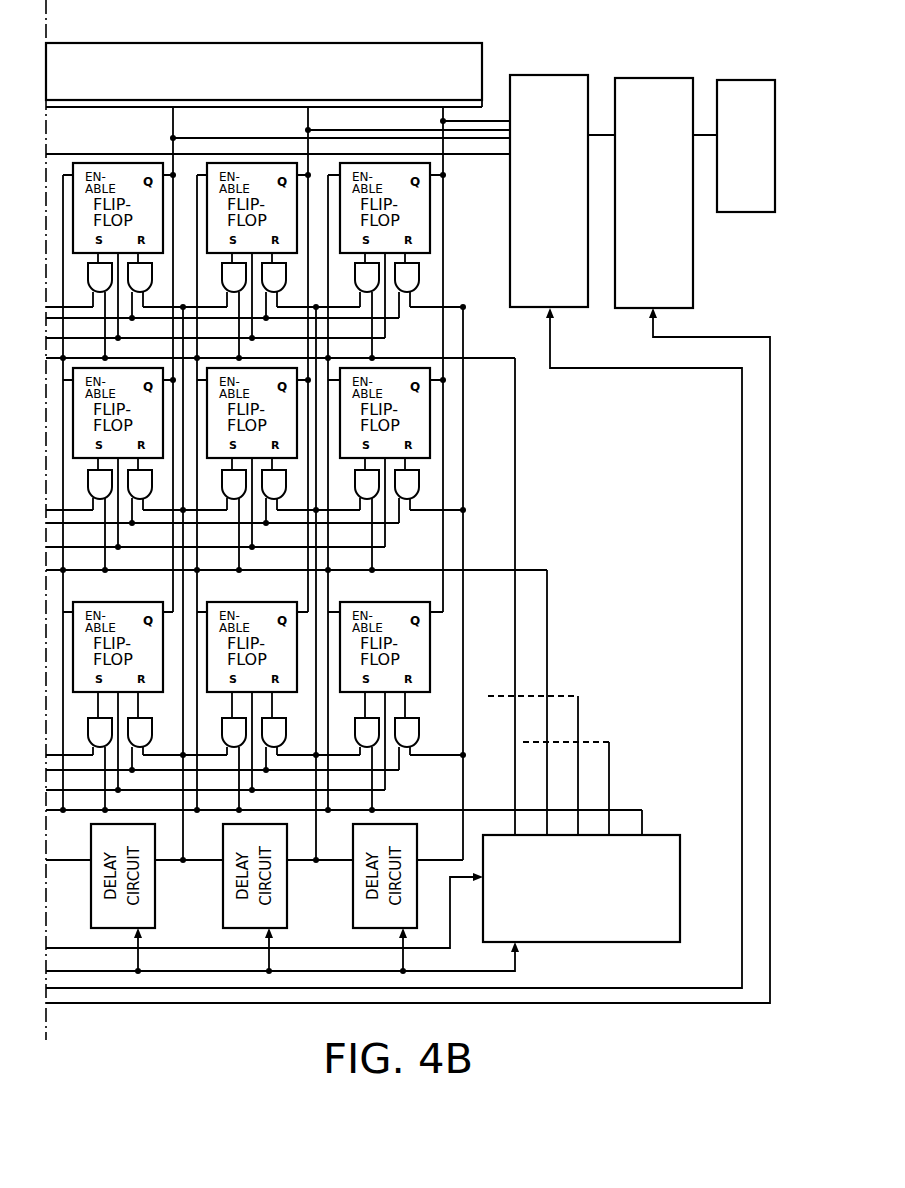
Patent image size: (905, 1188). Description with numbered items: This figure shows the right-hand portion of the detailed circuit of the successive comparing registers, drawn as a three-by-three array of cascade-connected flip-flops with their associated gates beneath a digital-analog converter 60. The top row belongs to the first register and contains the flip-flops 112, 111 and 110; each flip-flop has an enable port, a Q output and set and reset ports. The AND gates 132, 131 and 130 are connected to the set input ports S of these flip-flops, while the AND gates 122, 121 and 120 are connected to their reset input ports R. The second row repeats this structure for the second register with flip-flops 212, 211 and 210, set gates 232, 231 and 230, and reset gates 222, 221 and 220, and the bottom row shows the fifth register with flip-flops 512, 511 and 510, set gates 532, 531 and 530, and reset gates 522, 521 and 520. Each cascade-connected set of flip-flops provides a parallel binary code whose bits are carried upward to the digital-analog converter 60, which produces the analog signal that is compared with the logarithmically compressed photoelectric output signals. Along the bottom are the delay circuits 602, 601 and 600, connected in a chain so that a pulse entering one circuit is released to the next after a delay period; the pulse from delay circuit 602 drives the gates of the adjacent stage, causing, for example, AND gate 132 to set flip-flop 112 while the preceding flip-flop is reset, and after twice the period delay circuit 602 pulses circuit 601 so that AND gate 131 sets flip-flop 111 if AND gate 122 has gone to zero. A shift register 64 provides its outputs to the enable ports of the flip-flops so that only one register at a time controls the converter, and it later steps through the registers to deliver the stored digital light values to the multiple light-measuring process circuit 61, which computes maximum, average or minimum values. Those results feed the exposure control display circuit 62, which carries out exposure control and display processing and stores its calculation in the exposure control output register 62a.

The digital-analog converter 60 is at (352, 43).
The multiple light-measuring process circuit 61 is at (538, 75).
The exposure control display circuit 62 is at (636, 78).
The exposure control output register 62a is at (757, 80).
The shift register 64 is at (680, 885).
The flip-flop 110 is at (431, 217).
The flip-flop 111 is at (254, 163).
The flip-flop 112 is at (122, 163).
The AND gate 120 is at (416, 263).
The AND gate 121 is at (282, 263).
The AND gate 122 is at (148, 263).
The AND gate 130 is at (358, 263).
The AND gate 131 is at (226, 263).
The AND gate 132 is at (92, 263).
The flip-flop 210 is at (387, 368).
The flip-flop 211 is at (259, 368).
The flip-flop 212 is at (120, 368).
The AND gate 220 is at (416, 470).
The AND gate 221 is at (282, 470).
The AND gate 222 is at (148, 470).
The AND gate 230 is at (358, 470).
The AND gate 231 is at (226, 470).
The AND gate 232 is at (92, 470).
The flip-flop 510 is at (368, 602).
The flip-flop 511 is at (236, 602).
The flip-flop 512 is at (102, 602).
The AND gate 520 is at (416, 718).
The AND gate 521 is at (282, 718).
The AND gate 522 is at (148, 718).
The AND gate 530 is at (358, 718).
The AND gate 531 is at (226, 718).
The AND gate 532 is at (92, 718).
The delay circuit 600 is at (353, 910).
The delay circuit 601 is at (223, 905).
The delay circuit 602 is at (155, 898).